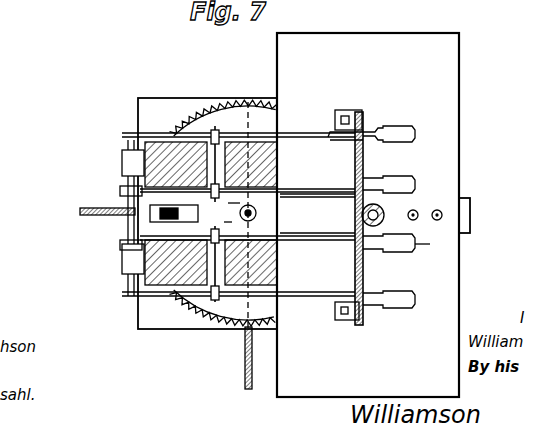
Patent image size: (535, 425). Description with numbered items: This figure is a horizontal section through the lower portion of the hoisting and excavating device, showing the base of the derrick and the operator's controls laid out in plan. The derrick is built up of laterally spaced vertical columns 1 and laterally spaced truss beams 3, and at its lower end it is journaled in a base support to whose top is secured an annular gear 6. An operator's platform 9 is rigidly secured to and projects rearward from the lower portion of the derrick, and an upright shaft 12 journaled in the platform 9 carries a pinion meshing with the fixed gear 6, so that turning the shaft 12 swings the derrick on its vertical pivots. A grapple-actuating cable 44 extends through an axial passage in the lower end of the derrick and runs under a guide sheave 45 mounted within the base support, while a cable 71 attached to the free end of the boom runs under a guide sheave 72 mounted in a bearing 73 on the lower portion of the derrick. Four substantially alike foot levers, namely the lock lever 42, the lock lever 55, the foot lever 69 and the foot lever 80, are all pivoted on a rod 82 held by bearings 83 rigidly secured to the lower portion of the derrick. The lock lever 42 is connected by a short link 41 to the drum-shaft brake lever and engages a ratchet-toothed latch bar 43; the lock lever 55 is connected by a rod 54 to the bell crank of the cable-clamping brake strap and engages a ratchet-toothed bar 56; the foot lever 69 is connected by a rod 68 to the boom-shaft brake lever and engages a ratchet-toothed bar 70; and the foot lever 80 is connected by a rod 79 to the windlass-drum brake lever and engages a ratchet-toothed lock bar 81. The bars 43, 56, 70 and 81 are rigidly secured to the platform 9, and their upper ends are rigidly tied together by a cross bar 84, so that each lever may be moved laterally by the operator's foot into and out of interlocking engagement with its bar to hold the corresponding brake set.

The operator's platform 9 is at (404, 47).
The annular gear 6 is at (232, 118).
The short link 41 is at (208, 300).
The vertical columns 1 is at (270, 134).
The truss beams 3 is at (160, 158).
The rod 79 is at (214, 130).
The rod 82 is at (128, 223).
The guide sheave 45 is at (257, 214).
The rod 54 is at (238, 211).
The rod 68 is at (222, 222).
The grapple-actuating cable 44 is at (246, 376).
The bearings 83 is at (128, 164).
The guide sheave 72 is at (130, 192).
The bearing 73 is at (128, 246).
The cable 71 is at (90, 210).
The upright shaft 12 is at (386, 214).
The ratchet-toothed bar 56 is at (355, 212).
The ratchet-toothed bar 70 is at (352, 230).
The ratchet-toothed lock bar 81 is at (350, 118).
The ratchet-toothed latch bar 43 is at (345, 322).
The foot lever 80 is at (415, 133).
The lock lever 55 is at (410, 184).
The cross bar 84 is at (366, 250).
The foot lever 69 is at (416, 244).
The lock lever 42 is at (413, 306).